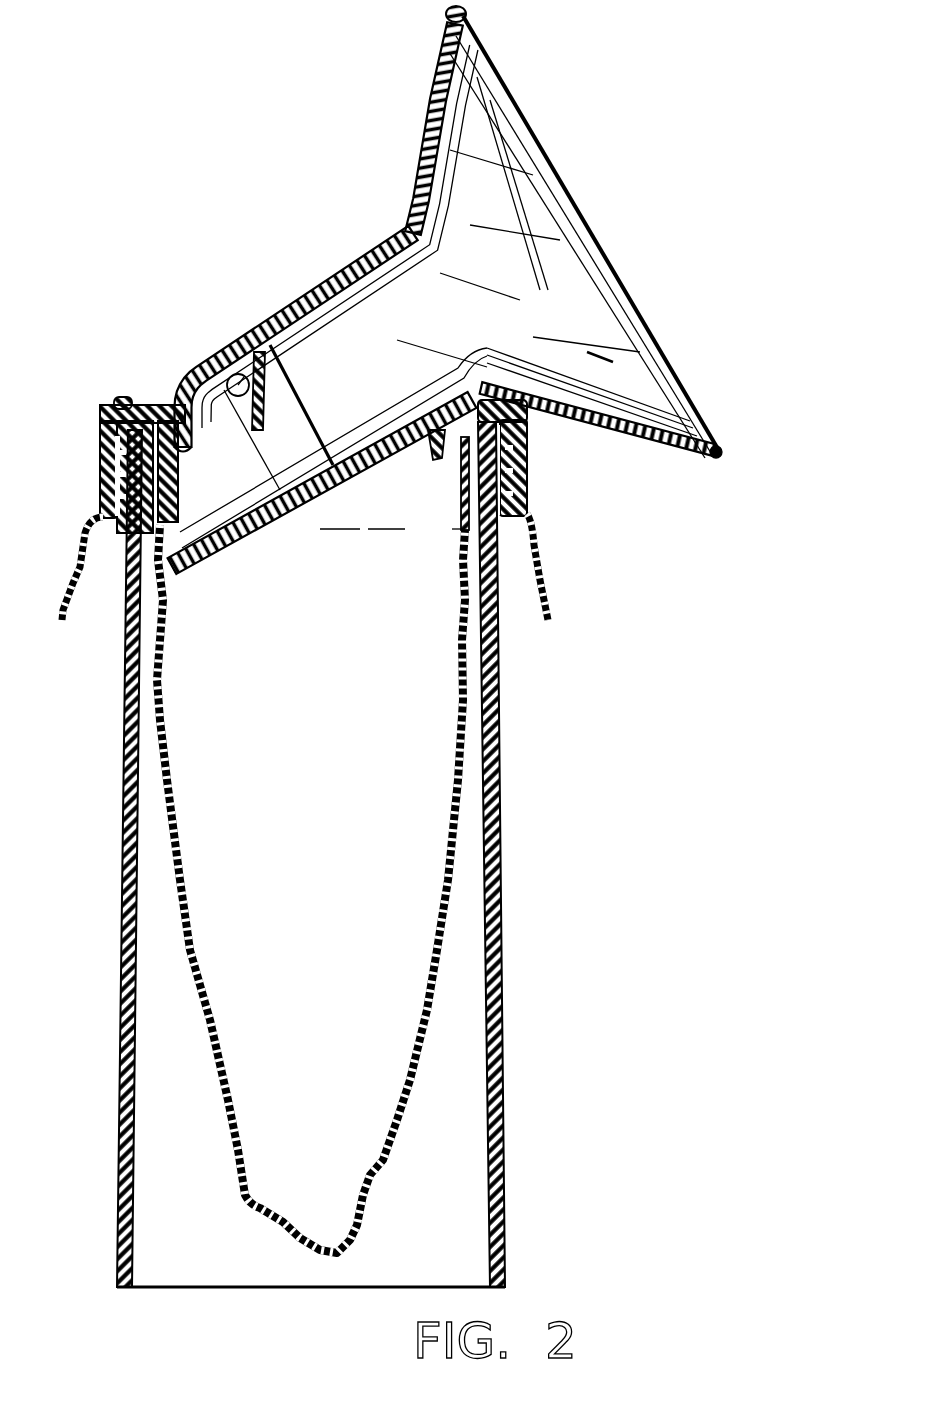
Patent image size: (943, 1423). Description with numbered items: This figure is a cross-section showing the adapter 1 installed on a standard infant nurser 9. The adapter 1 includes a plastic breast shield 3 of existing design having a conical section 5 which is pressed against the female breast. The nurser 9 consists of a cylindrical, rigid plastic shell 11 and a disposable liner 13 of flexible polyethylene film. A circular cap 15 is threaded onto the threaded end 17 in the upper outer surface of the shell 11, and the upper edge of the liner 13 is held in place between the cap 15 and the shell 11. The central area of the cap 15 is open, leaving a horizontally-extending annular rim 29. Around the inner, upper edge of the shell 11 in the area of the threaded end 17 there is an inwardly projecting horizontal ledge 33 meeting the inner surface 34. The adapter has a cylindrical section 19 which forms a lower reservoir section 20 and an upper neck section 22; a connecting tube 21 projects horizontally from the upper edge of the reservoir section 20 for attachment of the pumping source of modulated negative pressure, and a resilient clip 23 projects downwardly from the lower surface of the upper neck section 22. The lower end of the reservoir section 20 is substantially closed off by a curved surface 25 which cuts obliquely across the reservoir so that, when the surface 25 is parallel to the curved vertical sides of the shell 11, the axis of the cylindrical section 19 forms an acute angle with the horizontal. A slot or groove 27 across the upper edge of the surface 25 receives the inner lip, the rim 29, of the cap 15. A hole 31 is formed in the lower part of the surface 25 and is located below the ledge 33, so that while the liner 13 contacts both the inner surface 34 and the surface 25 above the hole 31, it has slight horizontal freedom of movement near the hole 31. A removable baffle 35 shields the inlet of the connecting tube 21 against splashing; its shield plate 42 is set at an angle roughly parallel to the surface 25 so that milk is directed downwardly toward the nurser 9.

The adapter 1 is at (319, 262).
The breast shield 3 is at (548, 162).
The conical section 5 is at (422, 150).
The infant nurser 9 is at (373, 854).
The shell 11 is at (503, 917).
The disposable liner 13 is at (537, 518).
The cap 15 is at (100, 472).
The threaded end 17 is at (527, 481).
The cylindrical section 19 is at (353, 272).
The reservoir section 20 is at (253, 523).
The connecting tube 21 is at (238, 356).
The upper neck section 22 is at (443, 336).
The resilient clip 23 is at (436, 452).
The curved surface 25 is at (188, 510).
The slot or groove 27 is at (270, 453).
The annular rim 29 is at (143, 406).
The hole 31 is at (200, 562).
The ledge 33 is at (463, 540).
The inner surface 34 is at (391, 524).
The baffle 35 is at (292, 430).
The shield plate 42 is at (303, 363).